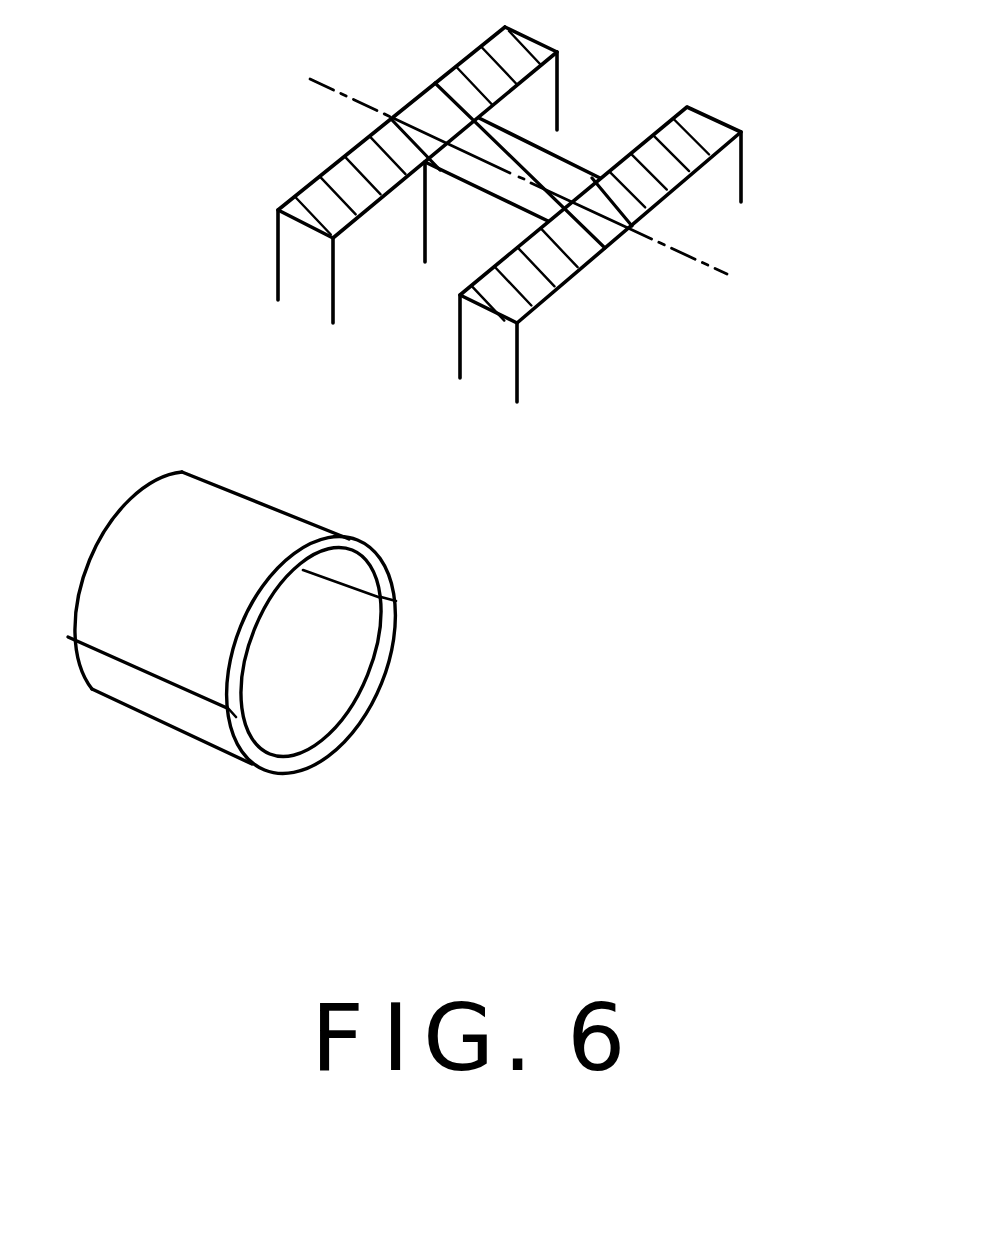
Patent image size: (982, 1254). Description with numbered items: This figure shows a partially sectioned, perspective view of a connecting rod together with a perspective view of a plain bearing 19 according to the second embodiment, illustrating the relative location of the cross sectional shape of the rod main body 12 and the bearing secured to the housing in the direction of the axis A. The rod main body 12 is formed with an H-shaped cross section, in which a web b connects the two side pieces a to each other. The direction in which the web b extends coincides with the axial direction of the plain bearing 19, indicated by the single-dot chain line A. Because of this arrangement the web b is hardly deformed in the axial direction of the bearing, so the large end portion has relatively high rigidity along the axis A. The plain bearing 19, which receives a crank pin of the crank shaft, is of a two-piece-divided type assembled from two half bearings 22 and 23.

The rod main body 12 is at (549, 207).
The side pieces a is at (308, 183).
The web b is at (560, 153).
The axis A is at (727, 266).
The plain bearing 19 is at (233, 653).
The half bearing 22 is at (140, 515).
The half bearing 23 is at (113, 693).